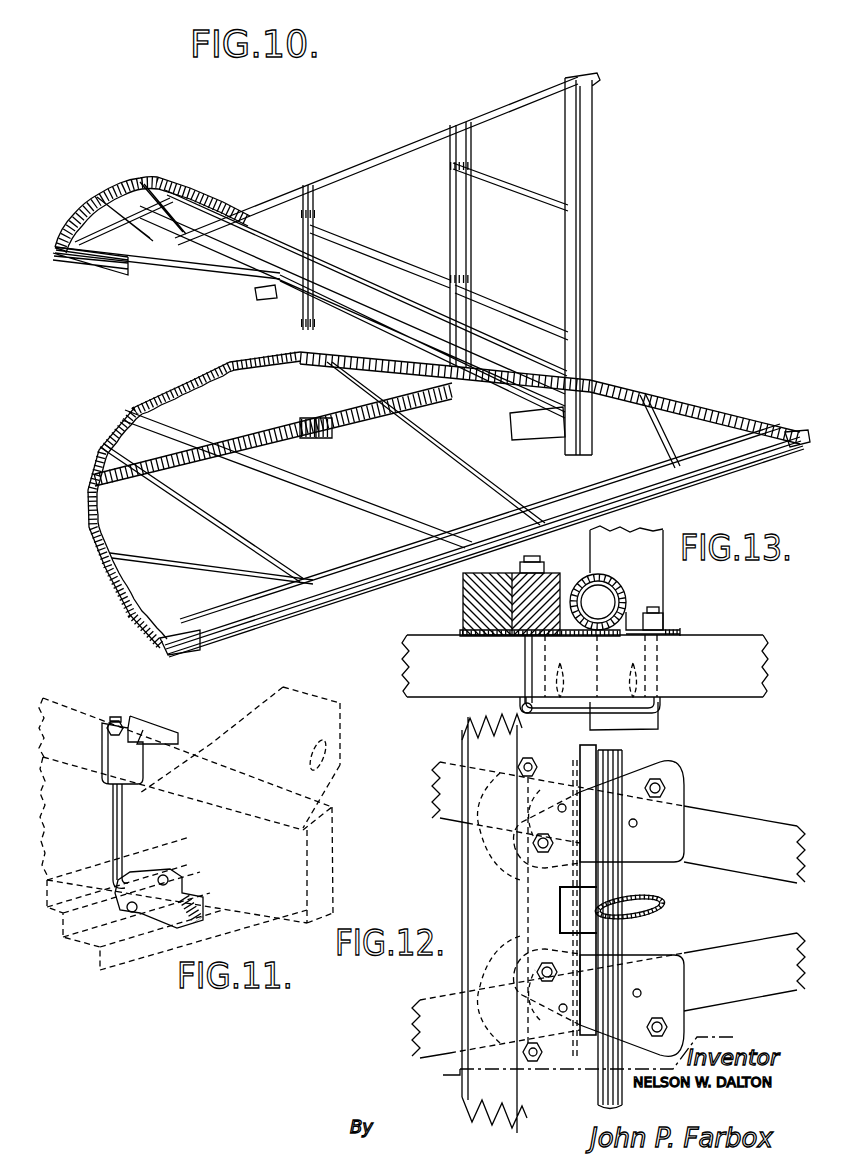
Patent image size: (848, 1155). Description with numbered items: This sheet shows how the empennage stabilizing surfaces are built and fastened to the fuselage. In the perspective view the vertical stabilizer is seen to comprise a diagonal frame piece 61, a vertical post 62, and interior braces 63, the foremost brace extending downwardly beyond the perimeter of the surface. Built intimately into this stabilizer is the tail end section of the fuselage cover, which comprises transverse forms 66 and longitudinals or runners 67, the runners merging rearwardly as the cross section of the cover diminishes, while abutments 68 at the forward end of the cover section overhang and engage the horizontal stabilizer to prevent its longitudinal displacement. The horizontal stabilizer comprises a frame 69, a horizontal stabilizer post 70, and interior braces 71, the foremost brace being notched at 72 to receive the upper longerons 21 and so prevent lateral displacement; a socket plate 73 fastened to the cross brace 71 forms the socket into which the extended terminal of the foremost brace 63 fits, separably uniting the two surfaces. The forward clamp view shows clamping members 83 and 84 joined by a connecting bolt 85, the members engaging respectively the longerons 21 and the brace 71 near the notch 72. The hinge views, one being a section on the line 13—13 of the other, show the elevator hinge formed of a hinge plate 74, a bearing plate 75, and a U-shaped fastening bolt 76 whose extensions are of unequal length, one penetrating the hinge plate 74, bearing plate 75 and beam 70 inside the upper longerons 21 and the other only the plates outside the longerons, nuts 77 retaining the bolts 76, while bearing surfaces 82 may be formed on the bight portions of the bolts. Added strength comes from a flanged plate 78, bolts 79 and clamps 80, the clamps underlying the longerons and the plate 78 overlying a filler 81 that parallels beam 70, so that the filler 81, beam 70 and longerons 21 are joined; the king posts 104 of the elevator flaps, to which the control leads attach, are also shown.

In FIG. 12, the section line 13— 13 is at (585, 1061).
In FIG. 13, the upper longerons 21 is at (758, 660).
In FIG. 12, the upper longerons 21 is at (753, 830).
In FIG. 11, the upper longerons 21 is at (287, 687).
In FIG. 10, the diagonal frame piece 61 is at (370, 157).
In FIG. 10, the vertical post 62 is at (570, 153).
In FIG. 10, the interior braces 63 is at (450, 210).
In FIG. 10, the transverse forms 66 is at (127, 183).
In FIG. 10, the longitudinals or runners 67 is at (180, 240).
In FIG. 10, the abutments 68 is at (108, 267).
In FIG. 10, the frame 69 is at (143, 392).
In FIG. 10, the horizontal stabilizer post 70 is at (200, 627).
In FIG. 12, the horizontal stabilizer post 70 is at (660, 930).
In FIG. 10, the interior braces 71 is at (197, 513).
In FIG. 11, the interior braces 71 is at (325, 840).
In FIG. 10, the notch 72 is at (372, 420).
In FIG. 11, the notch 72 is at (203, 821).
In FIG. 10, the socket plate 73 is at (316, 438).
In FIG. 13, the hinge plate 74 is at (630, 590).
In FIG. 13, the bearing plate 75 is at (673, 632).
In FIG. 12, the bearing plate 75 is at (684, 833).
In FIG. 13, the U-shaped fastening bolt 76 is at (660, 710).
In FIG. 13, the nuts 77 is at (665, 618).
In FIG. 12, the flanged plate 78 is at (463, 878).
In FIG. 13, the bolts 79 is at (523, 650).
In FIG. 12, the bolts 79 is at (517, 763).
In FIG. 13, the clamps 80 is at (512, 700).
In FIG. 12, the clamps 80 is at (509, 908).
In FIG. 10, the filler 81 is at (478, 522).
In FIG. 13, the filler 81 is at (463, 600).
In FIG. 12, the filler 81 is at (473, 847).
In FIG. 13, the bearing surfaces 82 is at (633, 732).
In FIG. 12, the bearing surfaces 82 is at (684, 985).
In FIG. 11, the clamping member 83 is at (193, 910).
In FIG. 11, the clamping member 84 is at (160, 722).
In FIG. 11, the connecting bolt 85 is at (112, 817).
In FIG. 13, the king posts 104 is at (667, 593).
In FIG. 12, the king posts 104 is at (655, 898).